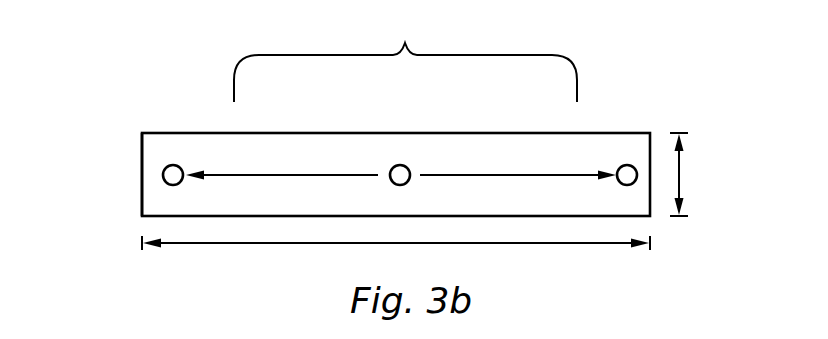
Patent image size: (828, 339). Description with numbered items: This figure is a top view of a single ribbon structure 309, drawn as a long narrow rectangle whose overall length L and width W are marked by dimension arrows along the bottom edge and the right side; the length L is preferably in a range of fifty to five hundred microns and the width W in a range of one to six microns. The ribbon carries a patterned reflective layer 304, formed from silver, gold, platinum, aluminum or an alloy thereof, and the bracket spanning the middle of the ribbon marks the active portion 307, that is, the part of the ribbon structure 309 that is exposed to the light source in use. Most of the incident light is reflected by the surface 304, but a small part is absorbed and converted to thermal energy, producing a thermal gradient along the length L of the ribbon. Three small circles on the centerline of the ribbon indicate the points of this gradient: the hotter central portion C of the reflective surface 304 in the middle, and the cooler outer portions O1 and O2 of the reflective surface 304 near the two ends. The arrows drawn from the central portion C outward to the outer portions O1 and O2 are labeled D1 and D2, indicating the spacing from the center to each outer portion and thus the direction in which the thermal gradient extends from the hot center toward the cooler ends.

The reflective layer 304 is at (165, 143).
The active portion 307 is at (405, 57).
The ribbon structure 309 is at (142, 203).
The outer portion O1 is at (163, 175).
The outer portion O2 is at (628, 165).
The central portion C is at (401, 165).
The distance from center to first orifice D1 is at (313, 174).
The distance from center to second orifice D2 is at (461, 174).
The width W is at (681, 171).
The length L is at (263, 245).